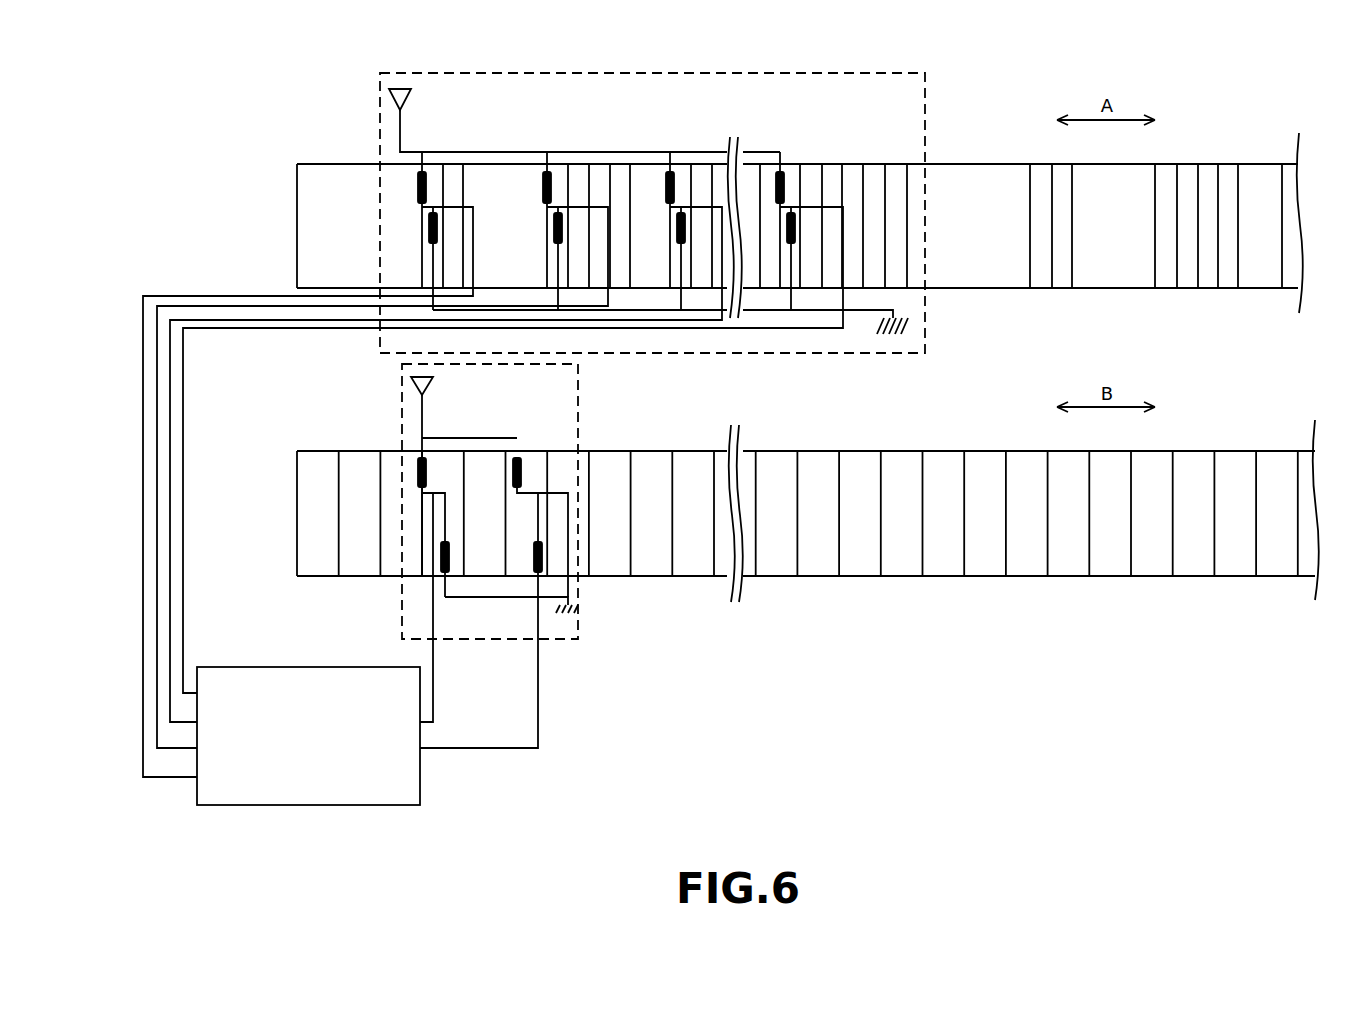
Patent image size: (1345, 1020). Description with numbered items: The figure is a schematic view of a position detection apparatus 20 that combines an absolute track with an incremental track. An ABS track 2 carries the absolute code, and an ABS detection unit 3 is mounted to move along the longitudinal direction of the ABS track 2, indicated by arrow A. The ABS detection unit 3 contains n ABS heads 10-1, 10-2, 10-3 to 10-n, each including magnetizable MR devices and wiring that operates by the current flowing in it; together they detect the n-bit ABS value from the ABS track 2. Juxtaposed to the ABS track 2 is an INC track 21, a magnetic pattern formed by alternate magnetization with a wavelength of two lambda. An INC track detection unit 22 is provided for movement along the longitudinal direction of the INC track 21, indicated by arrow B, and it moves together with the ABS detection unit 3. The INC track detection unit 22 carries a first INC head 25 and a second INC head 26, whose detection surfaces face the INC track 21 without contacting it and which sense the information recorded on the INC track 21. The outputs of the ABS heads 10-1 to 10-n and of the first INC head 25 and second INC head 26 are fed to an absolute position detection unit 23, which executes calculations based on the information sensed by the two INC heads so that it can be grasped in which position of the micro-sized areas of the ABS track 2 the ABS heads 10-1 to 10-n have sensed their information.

The ABS track 2 is at (998, 290).
The ABS detection unit 3 is at (930, 118).
The ABS head 10-1 is at (429, 205).
The ABS head 10-2 is at (554, 205).
The ABS head 10-3 is at (677, 205).
The ABS head 10-n is at (786, 205).
The position detection apparatus 20 is at (713, 62).
The INC track 21 is at (947, 577).
The INC track detection unit 22 is at (580, 617).
The absolute position detection unit 23 is at (291, 667).
The first INC head 25 is at (428, 492).
The second INC head 26 is at (527, 490).